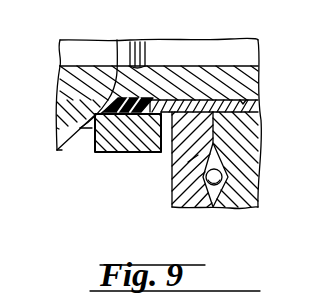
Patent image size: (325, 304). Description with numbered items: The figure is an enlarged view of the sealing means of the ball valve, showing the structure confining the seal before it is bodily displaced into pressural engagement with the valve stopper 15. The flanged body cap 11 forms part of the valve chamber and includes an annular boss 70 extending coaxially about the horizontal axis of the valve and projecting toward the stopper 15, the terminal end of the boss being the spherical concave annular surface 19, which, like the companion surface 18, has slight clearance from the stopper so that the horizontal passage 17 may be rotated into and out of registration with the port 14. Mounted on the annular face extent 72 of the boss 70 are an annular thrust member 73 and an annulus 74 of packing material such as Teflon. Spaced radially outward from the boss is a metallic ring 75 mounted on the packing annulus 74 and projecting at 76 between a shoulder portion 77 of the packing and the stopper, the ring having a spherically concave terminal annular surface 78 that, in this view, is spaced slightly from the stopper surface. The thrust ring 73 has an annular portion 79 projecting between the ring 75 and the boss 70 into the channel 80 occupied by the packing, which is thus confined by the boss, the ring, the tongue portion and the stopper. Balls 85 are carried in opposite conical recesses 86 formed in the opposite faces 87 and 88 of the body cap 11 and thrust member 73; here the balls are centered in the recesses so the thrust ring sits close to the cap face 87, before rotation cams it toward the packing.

The body cap 11 is at (262, 78).
The port 14 is at (88, 129).
The valve stopper 15 is at (72, 82).
The horizontal passage 17 is at (62, 58).
The spherical concave surface 18 is at (68, 150).
The annular surface 19 is at (117, 40).
The annular boss 70 is at (190, 78).
The annular face extent 72 is at (243, 104).
The thrust member 73 is at (173, 184).
The packing annulus 74 is at (147, 66).
The metallic ring 75 is at (95, 148).
The ring portion 76 is at (107, 100).
The shoulder portion 77 is at (80, 128).
The terminal annular surface 78 is at (103, 113).
The annular portion 79 is at (172, 86).
The channel 80 is at (109, 153).
The ball 85 is at (228, 172).
The conical recess 86 is at (227, 158).
The body cap face 87 is at (188, 162).
The thrust member face 88 is at (262, 115).